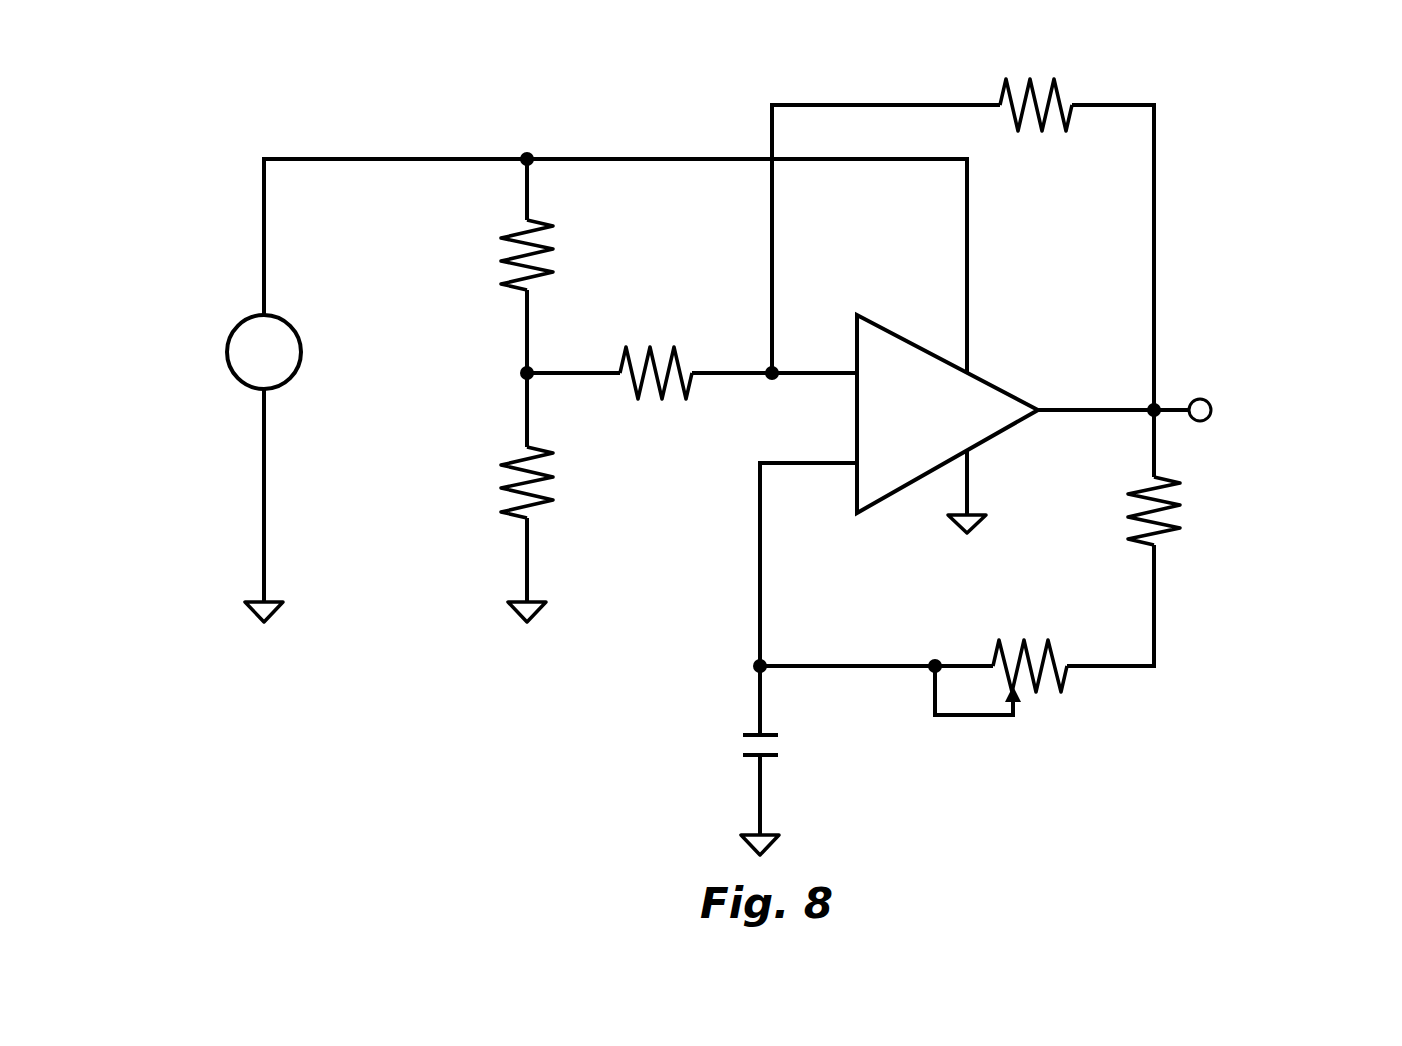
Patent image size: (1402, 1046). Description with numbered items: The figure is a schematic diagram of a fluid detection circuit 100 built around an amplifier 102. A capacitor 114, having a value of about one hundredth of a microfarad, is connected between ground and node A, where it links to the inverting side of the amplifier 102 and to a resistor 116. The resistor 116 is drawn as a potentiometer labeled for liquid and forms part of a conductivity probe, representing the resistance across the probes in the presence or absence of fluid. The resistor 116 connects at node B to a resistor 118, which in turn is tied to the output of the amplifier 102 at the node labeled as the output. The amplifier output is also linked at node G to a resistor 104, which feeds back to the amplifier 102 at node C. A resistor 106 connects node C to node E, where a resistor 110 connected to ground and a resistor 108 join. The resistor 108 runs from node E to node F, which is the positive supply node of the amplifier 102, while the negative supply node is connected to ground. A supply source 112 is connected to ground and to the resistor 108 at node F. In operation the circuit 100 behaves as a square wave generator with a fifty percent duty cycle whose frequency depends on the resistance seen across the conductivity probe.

The fluid detection circuit 100 is at (737, 452).
The amplifier 102 is at (925, 399).
The resistor 104 is at (994, 107).
The resistor 106 is at (631, 370).
The resistor 108 is at (489, 240).
The resistor 110 is at (489, 466).
The Vcc 112 is at (231, 335).
The capacitor 114 is at (724, 723).
The resistor 116 is at (1042, 677).
The resistor 118 is at (1166, 532).